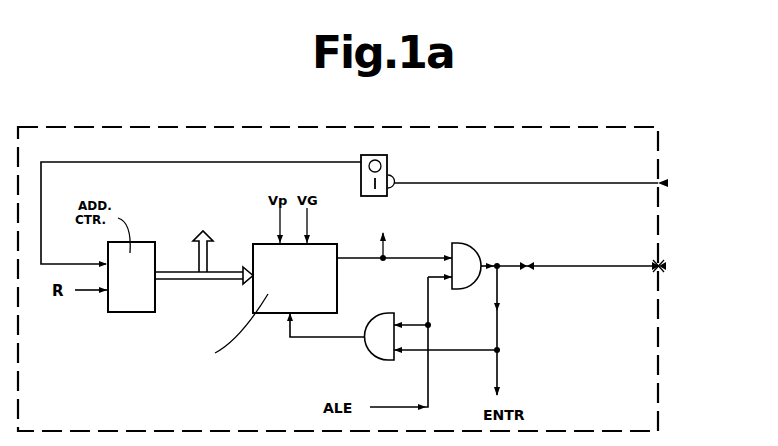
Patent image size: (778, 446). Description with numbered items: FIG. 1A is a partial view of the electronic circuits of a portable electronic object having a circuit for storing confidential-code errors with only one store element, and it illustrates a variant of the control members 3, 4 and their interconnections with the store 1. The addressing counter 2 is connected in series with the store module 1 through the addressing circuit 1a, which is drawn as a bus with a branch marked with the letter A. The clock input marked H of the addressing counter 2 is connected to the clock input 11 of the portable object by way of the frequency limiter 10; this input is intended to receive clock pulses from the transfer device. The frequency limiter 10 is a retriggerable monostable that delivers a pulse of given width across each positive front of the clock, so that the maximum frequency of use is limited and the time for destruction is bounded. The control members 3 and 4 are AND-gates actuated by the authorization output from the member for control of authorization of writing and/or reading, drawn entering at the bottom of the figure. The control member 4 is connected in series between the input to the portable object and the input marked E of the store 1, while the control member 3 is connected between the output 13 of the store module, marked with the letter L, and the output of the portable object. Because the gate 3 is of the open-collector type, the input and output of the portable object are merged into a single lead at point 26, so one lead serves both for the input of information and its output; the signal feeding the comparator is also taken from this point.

The store module 1 is at (267, 318).
The addressing circuit 1a is at (215, 280).
The addressing counter 2 is at (132, 312).
The control member 3 is at (464, 249).
The control member 4 is at (380, 338).
The frequency limiter 10 is at (390, 173).
The clock input 11 is at (664, 182).
The output from the store module 13 is at (384, 268).
The input LIG point 26 is at (498, 262).